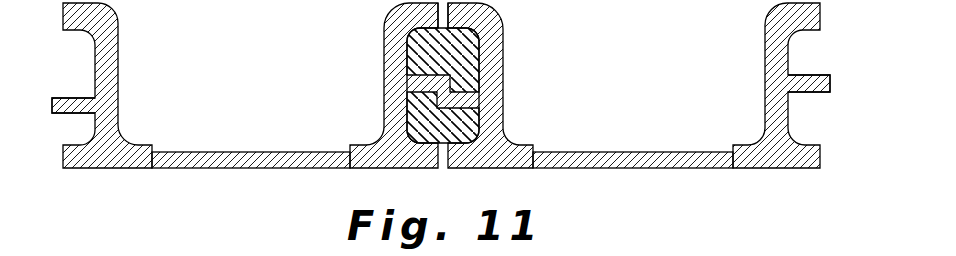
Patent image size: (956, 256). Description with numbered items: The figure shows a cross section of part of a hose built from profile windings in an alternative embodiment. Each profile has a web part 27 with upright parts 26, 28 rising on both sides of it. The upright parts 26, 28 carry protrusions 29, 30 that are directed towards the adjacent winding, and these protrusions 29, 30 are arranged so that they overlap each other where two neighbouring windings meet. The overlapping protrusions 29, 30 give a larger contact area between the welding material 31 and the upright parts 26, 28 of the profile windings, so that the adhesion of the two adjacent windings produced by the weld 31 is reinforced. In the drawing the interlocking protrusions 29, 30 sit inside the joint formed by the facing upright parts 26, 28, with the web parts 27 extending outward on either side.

The upright part 26 is at (117, 45).
The web part 27 is at (258, 152).
The upright part 28 is at (397, 53).
The protrusion 29 is at (81, 100).
The protrusion 30 is at (435, 80).
The welding material 31 is at (485, 28).